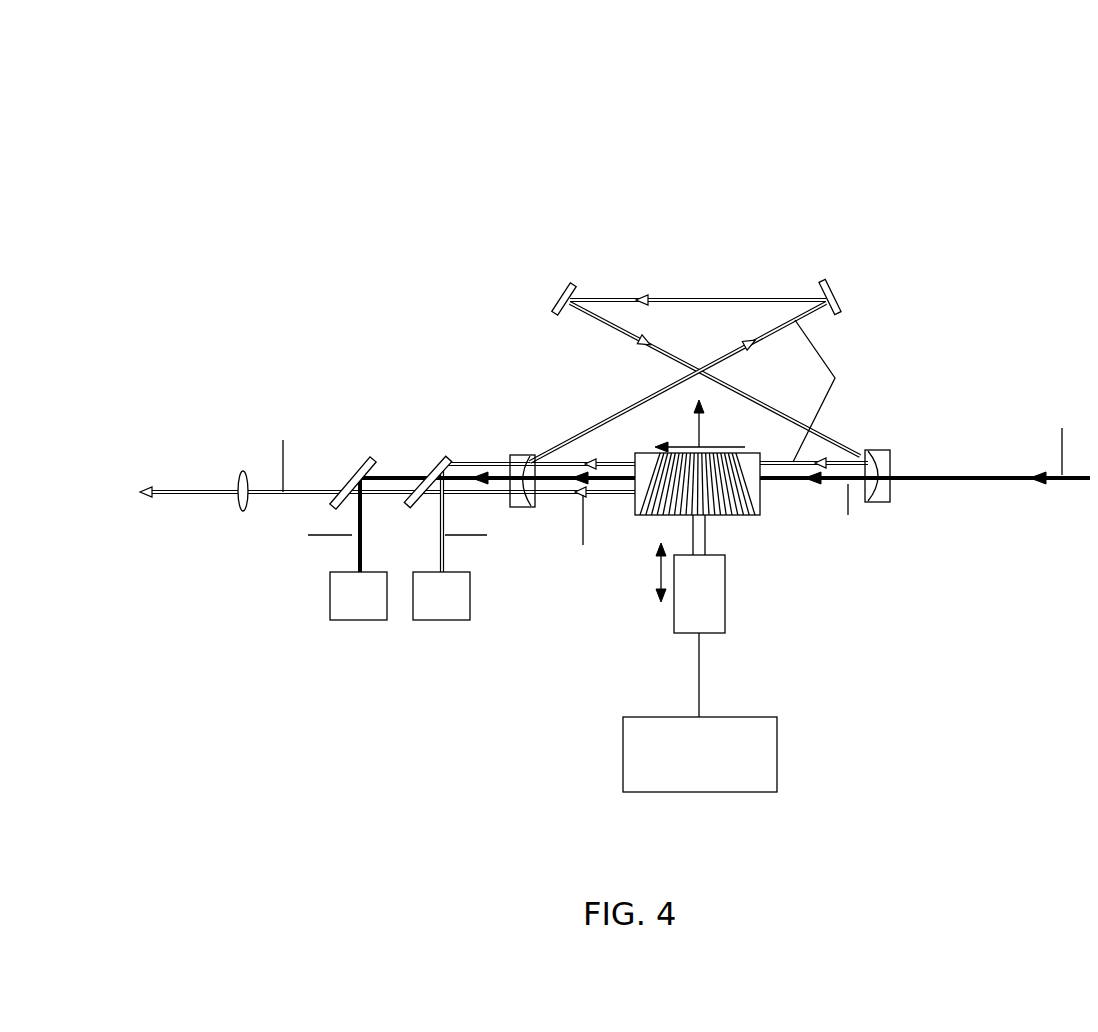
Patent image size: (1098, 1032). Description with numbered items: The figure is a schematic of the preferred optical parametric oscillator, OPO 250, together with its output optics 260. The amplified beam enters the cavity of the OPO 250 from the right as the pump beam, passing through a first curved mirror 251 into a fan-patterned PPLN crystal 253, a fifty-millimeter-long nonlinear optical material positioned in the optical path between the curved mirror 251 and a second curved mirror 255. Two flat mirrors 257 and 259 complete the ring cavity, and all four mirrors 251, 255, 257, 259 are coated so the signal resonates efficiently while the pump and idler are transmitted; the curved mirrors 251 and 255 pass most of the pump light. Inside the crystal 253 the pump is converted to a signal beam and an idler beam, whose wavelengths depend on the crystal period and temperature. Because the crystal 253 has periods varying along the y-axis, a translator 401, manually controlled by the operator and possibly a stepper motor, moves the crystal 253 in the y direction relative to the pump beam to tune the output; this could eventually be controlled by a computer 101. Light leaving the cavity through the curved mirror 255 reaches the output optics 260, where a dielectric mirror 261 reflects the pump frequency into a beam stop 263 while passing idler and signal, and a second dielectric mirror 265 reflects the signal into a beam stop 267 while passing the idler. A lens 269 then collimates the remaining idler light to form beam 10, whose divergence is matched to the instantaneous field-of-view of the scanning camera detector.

The OPO 250 is at (513, 88).
The output optics 260 is at (615, 412).
The beam 10 is at (195, 492).
The lens 269 is at (243, 470).
The dielectric mirror 265 is at (358, 458).
The dielectric mirror 261 is at (441, 458).
The curved mirror 255 is at (524, 455).
The flat mirror 259 is at (568, 285).
The flat mirror 257 is at (822, 280).
The PPLN crystal 253 is at (740, 515).
The curved mirror 251 is at (880, 502).
The translator 401 is at (725, 607).
The computer 101 is at (678, 757).
The beam stop 267 is at (372, 620).
The beam stop 263 is at (437, 620).